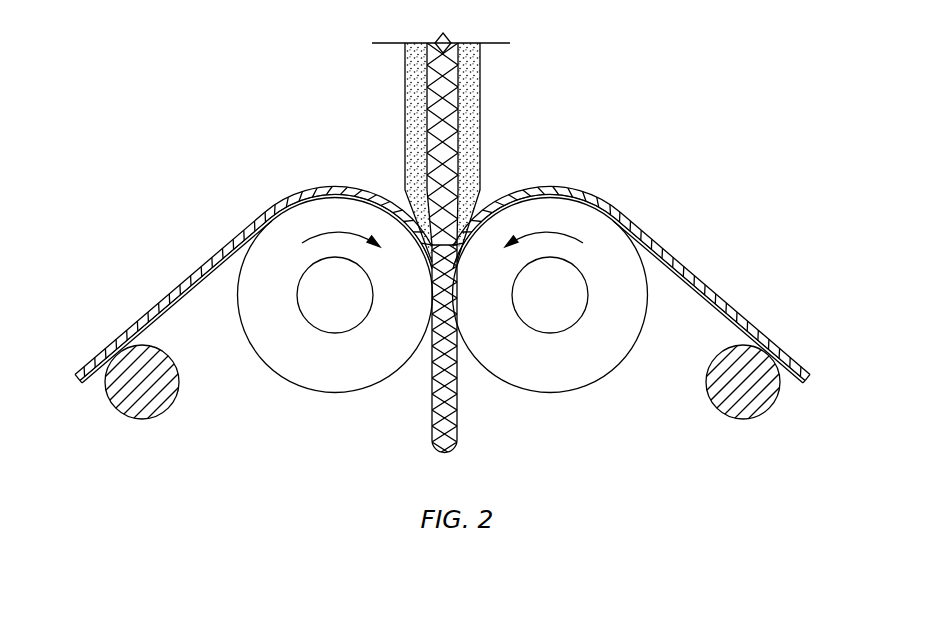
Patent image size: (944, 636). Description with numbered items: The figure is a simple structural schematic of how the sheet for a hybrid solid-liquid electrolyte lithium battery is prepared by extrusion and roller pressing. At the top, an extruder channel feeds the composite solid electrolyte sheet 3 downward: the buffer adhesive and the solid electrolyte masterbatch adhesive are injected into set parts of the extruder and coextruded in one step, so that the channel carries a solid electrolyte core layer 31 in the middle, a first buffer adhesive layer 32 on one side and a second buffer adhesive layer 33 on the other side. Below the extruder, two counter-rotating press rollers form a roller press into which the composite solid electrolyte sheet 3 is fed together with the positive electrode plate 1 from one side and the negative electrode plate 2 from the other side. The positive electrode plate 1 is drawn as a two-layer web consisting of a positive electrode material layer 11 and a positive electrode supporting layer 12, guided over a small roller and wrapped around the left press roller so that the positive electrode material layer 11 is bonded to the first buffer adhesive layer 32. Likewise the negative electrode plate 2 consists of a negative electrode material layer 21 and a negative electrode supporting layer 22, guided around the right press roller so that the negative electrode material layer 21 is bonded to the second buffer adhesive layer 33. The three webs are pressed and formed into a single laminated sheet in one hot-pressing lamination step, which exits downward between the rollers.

The positive electrode plate 1 is at (238, 280).
The positive electrode material layer 11 is at (227, 253).
The positive electrode supporting layer 12 is at (187, 288).
The negative electrode plate 2 is at (652, 284).
The negative electrode material layer 21 is at (670, 252).
The negative electrode supporting layer 22 is at (712, 295).
The composite solid electrolyte sheet 3 is at (506, 142).
The solid electrolyte core layer 31 is at (448, 75).
The first buffer adhesive layer 32 is at (418, 95).
The second buffer adhesive layer 33 is at (467, 138).